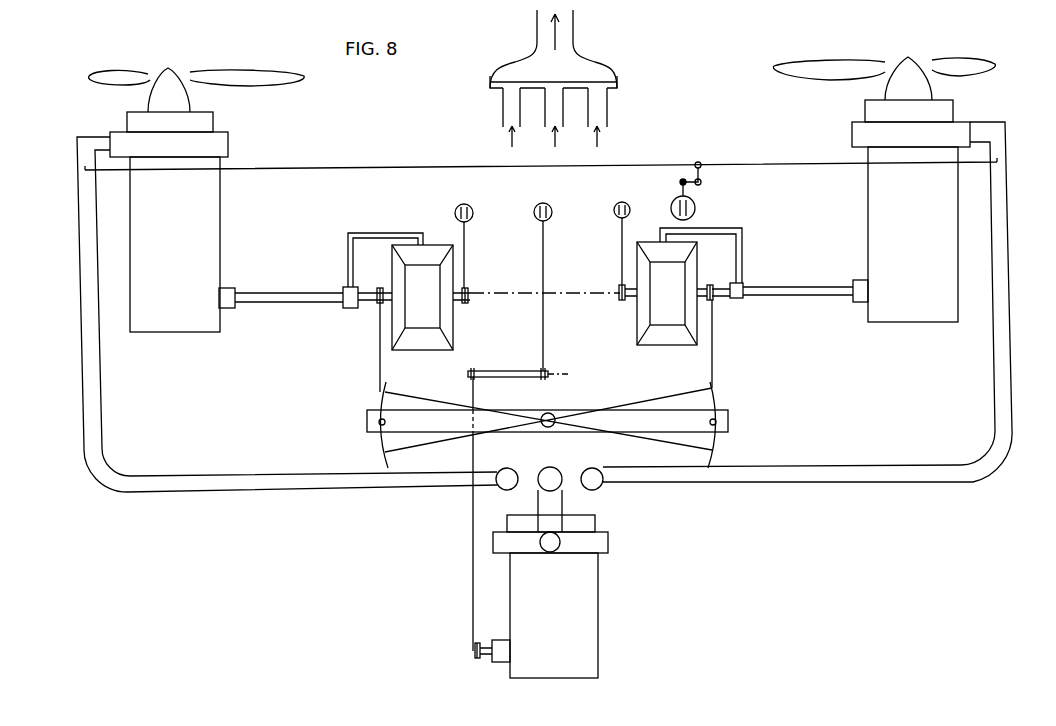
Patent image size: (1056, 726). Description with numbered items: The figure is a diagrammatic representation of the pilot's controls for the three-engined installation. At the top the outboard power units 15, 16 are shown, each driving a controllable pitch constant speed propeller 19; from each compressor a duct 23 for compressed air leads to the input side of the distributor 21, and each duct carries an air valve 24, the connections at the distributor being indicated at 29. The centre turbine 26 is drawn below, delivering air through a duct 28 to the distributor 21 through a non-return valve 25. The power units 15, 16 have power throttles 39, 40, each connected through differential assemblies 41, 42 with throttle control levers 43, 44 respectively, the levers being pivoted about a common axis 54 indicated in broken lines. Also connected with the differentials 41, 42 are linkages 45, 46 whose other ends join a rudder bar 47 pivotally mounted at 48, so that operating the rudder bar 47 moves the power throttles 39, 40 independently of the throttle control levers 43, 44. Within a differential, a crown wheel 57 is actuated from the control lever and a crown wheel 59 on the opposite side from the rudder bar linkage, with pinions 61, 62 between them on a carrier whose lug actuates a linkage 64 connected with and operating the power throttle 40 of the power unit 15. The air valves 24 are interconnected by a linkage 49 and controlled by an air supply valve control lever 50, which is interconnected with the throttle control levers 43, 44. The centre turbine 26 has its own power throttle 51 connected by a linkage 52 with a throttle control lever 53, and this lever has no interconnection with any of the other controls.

The power unit 15 is at (880, 195).
The power unit 16 is at (207, 227).
The variable pitch propeller 19 is at (290, 80).
The distributor 21 is at (548, 62).
The duct 23 is at (510, 112).
The air valve 24 is at (80, 192).
The non-return valve 25 is at (508, 463).
The third turbine 26 is at (588, 587).
The duct 28 is at (552, 107).
The injector 29 is at (490, 80).
The power throttle 39 is at (223, 297).
The power throttle 40 is at (865, 280).
The differential assembly 41 is at (418, 280).
The differential assembly 42 is at (670, 278).
The throttle control lever 43 is at (468, 236).
The throttle control lever 44 is at (620, 222).
The linkage 45 is at (380, 365).
The linkage 46 is at (712, 363).
The rudder bar 47 is at (588, 420).
The pivot 48 is at (548, 413).
The linkage 49 is at (350, 168).
The air supply valve control lever 50 is at (695, 217).
The power throttle 51 is at (493, 640).
The linkage 52 is at (473, 537).
The throttle control lever 53 is at (543, 325).
The common axis 54 is at (483, 290).
The crown wheel 57 is at (642, 322).
The crown wheel 59 is at (697, 325).
The pinion 61 is at (662, 248).
The pinion 62 is at (668, 340).
The linkage 64 is at (742, 260).